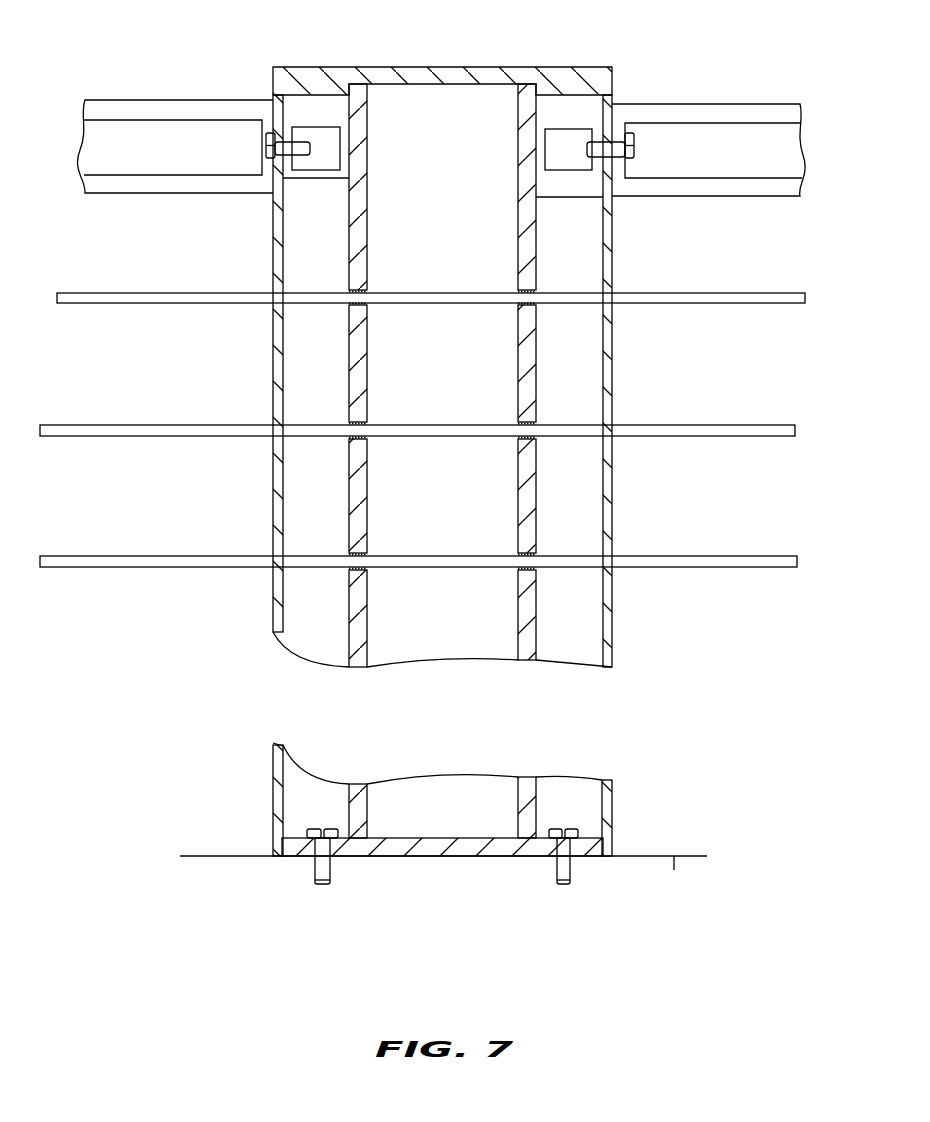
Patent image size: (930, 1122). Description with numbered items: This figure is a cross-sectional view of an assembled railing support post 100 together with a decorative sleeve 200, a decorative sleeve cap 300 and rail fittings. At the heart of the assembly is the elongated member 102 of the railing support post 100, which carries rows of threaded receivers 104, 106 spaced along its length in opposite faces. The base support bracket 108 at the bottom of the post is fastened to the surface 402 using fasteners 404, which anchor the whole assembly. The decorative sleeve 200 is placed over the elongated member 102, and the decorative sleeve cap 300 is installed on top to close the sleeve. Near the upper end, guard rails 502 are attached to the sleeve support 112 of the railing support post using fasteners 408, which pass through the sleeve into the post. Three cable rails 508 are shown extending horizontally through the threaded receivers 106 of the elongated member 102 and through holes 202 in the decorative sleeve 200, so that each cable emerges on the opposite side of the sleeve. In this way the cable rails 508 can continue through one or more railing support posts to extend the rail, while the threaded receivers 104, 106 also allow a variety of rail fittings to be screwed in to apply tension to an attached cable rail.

The railing support post 100 is at (352, 678).
The elongated member 102 is at (461, 103).
The threaded receivers 104 is at (368, 290).
The threaded receivers 106 is at (518, 306).
The base support bracket 108 is at (443, 857).
The sleeve support 112 is at (312, 118).
The decorative sleeve 200 is at (272, 247).
The holes 202 is at (612, 290).
The decorative sleeve cap 300 is at (284, 66).
The surface 402 is at (674, 870).
The fasteners 404 is at (323, 884).
The fasteners 408 is at (265, 157).
The guard rails 502 is at (119, 101).
The cable rails 508 is at (125, 294).